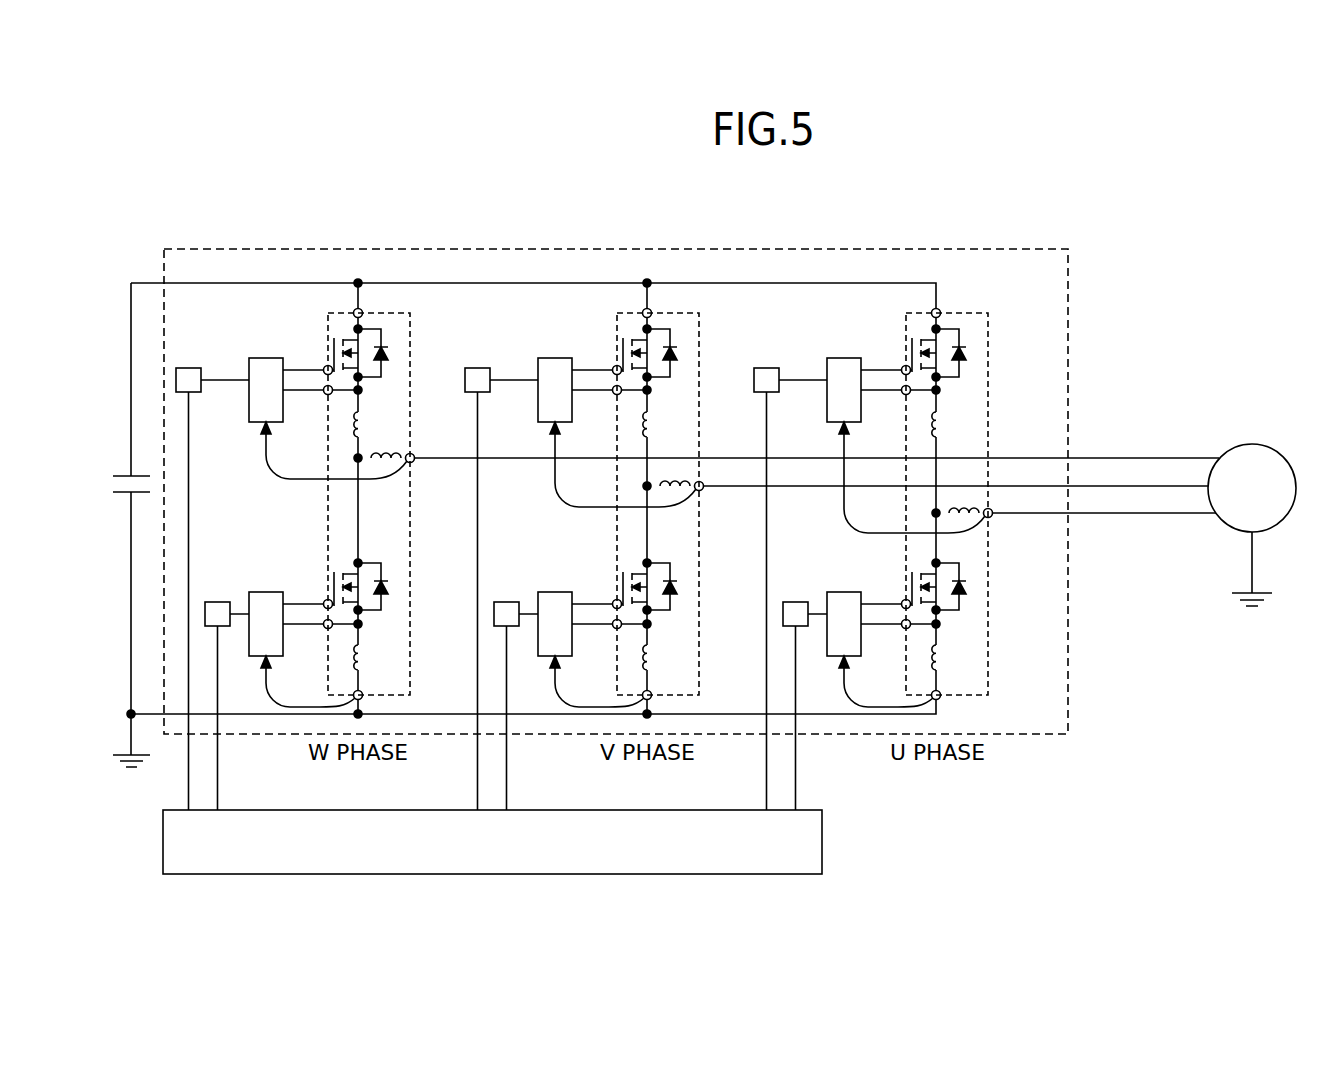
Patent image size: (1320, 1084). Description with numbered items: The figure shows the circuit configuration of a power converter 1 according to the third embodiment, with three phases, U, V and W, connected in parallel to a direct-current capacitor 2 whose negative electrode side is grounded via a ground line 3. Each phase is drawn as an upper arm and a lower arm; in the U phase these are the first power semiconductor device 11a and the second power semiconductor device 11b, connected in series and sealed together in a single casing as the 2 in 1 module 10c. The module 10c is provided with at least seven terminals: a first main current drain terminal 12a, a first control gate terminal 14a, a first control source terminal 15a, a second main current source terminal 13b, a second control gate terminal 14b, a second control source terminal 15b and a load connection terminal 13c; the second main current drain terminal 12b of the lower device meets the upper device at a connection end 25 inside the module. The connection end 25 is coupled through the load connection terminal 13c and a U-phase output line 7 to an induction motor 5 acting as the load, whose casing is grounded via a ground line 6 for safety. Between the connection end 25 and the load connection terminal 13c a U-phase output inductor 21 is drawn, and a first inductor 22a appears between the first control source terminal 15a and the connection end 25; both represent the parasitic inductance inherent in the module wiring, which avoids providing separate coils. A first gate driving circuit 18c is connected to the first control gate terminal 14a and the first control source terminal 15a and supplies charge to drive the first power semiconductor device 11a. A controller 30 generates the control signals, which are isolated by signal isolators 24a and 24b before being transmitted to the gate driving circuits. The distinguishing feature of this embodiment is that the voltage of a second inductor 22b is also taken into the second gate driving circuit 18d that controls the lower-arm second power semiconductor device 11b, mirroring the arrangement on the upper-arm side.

The power converter 1 is at (465, 249).
The direct-current capacitor 2 is at (128, 474).
The ground line 3 is at (131, 731).
The induction motor 5 is at (1275, 452).
The ground line 6 is at (1253, 560).
The U-phase output line 7 is at (1152, 515).
The 2 in 1 module 10c is at (988, 336).
The first power semiconductor device 11a is at (978, 354).
The second power semiconductor device 11b is at (978, 586).
The first main current drain terminal 12a is at (940, 312).
The second main current drain terminal 12b is at (940, 564).
The second main current source terminal 13b is at (940, 699).
The load connection terminal 13c is at (992, 518).
The first control gate terminal 14a is at (902, 367).
The second control gate terminal 14b is at (902, 601).
The first control source terminal 15a is at (903, 394).
The second control source terminal 15b is at (903, 628).
The first gate driving circuit 18c is at (846, 358).
The second gate driving circuit 18d is at (846, 592).
The U-phase output inductor 21 is at (968, 504).
The first inductor 22a is at (941, 432).
The second inductor 22b is at (941, 663).
The signal isolator 24a is at (767, 368).
The signal isolator 24b is at (795, 602).
The connection end 25 is at (932, 513).
The controller 30 is at (823, 844).